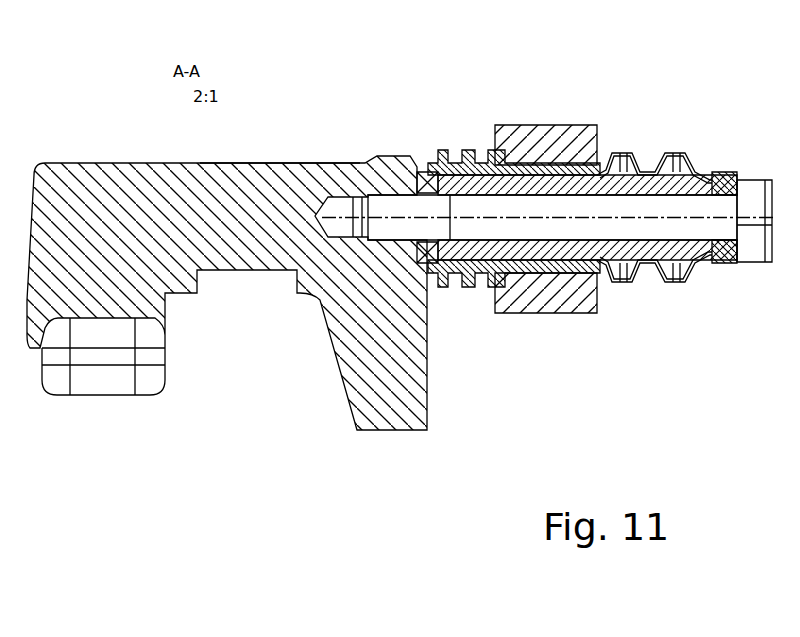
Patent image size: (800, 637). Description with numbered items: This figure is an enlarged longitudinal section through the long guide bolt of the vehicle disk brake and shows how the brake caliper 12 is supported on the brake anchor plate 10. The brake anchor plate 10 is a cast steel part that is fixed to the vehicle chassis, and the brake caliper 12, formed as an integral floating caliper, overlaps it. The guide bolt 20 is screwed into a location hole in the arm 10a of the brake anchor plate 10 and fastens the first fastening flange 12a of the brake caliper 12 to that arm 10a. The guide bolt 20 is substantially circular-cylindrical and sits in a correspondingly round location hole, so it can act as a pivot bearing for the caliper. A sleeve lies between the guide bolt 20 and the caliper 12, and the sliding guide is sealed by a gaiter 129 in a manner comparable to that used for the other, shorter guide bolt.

The brake anchor plate 10 is at (357, 378).
The arm 10a is at (296, 198).
The brake caliper 12 is at (542, 150).
The first fastening flange 12a is at (567, 293).
The guide bolt 20 is at (702, 210).
The gaiter 129 is at (623, 152).